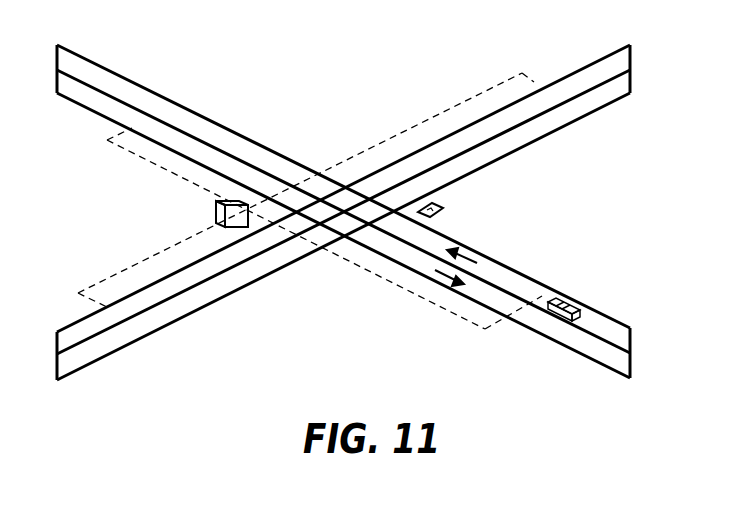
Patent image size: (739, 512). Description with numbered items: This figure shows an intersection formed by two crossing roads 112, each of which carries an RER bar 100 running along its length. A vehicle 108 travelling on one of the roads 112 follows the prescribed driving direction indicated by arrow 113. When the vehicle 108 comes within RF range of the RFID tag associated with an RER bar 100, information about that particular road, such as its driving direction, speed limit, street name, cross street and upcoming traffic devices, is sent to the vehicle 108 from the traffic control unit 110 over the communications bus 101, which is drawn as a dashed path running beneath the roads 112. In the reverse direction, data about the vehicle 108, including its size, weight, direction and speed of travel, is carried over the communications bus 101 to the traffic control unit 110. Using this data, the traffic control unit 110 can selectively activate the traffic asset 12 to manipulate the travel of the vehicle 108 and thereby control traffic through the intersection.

The RER bar 100 is at (127, 129).
The communications bus 101 is at (358, 157).
The traffic asset 12 is at (443, 208).
The vehicle 108 is at (580, 307).
The traffic control unit 110 is at (214, 211).
The road 112 is at (255, 268).
The arrow 113 is at (477, 263).